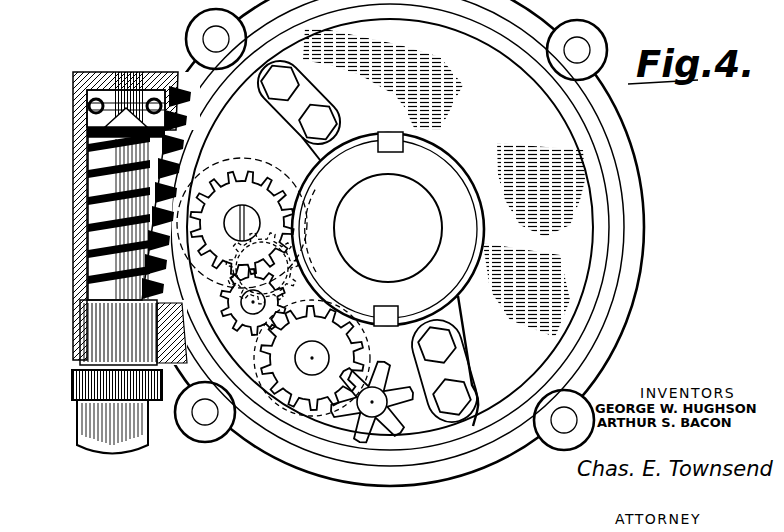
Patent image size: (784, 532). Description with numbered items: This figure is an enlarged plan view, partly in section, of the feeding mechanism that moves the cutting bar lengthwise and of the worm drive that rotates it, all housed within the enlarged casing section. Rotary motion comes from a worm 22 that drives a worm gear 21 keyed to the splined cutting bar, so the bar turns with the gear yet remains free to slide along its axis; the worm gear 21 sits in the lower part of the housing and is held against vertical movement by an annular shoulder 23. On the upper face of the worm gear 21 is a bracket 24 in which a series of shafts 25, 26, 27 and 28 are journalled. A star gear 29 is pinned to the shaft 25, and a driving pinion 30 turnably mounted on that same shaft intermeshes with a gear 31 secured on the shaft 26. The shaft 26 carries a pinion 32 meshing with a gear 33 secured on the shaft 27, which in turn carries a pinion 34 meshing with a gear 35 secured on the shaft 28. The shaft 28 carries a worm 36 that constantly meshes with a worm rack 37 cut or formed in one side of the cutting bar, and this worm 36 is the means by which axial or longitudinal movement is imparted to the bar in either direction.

The worm gear 21 is at (193, 85).
The worm 22 is at (78, 176).
The annular shoulder 23 is at (390, 243).
The bracket 24 is at (408, 377).
The shaft 25 is at (370, 402).
The shaft 26 is at (308, 372).
The shaft 27 is at (256, 302).
The shaft 28 is at (258, 225).
The star gear 29 is at (372, 360).
The driving pinion 30 is at (338, 380).
The gear 31 is at (243, 432).
The pinion 32 is at (306, 390).
The gear 33 is at (303, 280).
The pinion 34 is at (283, 267).
The gear 35 is at (276, 201).
The worm 36 is at (263, 173).
The worm rack 37 is at (296, 212).